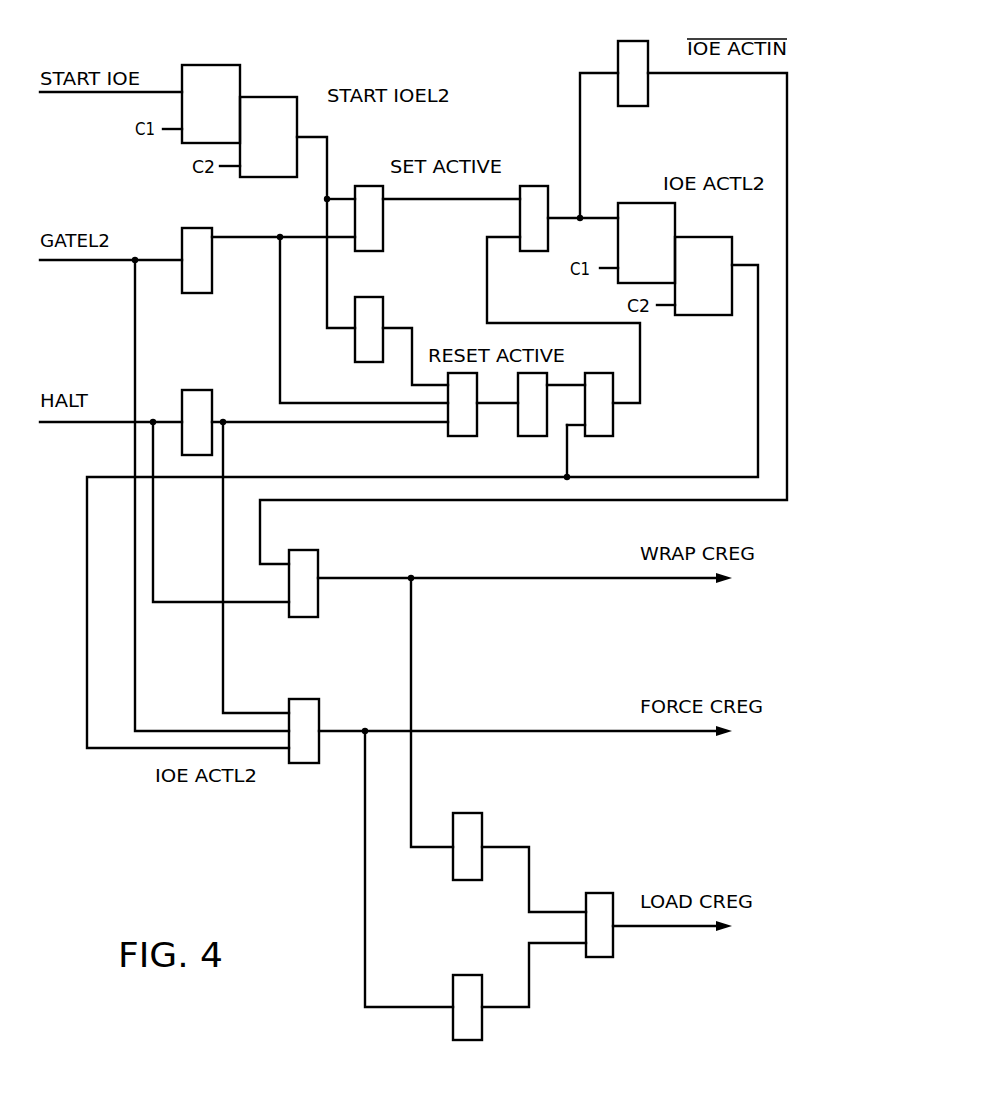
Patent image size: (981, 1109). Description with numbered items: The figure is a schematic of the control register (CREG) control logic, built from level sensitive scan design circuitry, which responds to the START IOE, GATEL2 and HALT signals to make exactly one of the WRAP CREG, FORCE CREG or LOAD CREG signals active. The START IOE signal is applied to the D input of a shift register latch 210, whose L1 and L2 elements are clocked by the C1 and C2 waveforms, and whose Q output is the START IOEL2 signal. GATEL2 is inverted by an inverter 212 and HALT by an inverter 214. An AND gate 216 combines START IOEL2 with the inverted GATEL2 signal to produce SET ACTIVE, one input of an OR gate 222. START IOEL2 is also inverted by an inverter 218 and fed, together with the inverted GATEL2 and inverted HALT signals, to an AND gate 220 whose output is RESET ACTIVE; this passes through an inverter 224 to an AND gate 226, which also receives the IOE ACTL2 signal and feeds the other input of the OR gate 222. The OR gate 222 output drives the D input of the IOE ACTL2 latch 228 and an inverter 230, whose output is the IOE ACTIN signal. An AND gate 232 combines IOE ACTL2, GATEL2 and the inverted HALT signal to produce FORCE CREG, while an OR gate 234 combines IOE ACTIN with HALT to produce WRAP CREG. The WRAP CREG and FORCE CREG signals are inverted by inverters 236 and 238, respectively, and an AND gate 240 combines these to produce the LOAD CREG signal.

The shift register latch 210 is at (230, 65).
The inverter 212 is at (200, 228).
The inverter 214 is at (197, 390).
The AND gate 216 is at (383, 222).
The inverter 218 is at (373, 300).
The AND gate 220 is at (462, 436).
The OR gate 222 is at (540, 186).
The inverter 224 is at (540, 436).
The AND gate 226 is at (606, 373).
The IOE ACTL2 latch 228 is at (705, 237).
The inverter 230 is at (633, 41).
The AND gate 232 is at (319, 703).
The OR gate 234 is at (305, 550).
The inverter 236 is at (470, 813).
The inverter 238 is at (470, 975).
The AND gate 240 is at (600, 893).